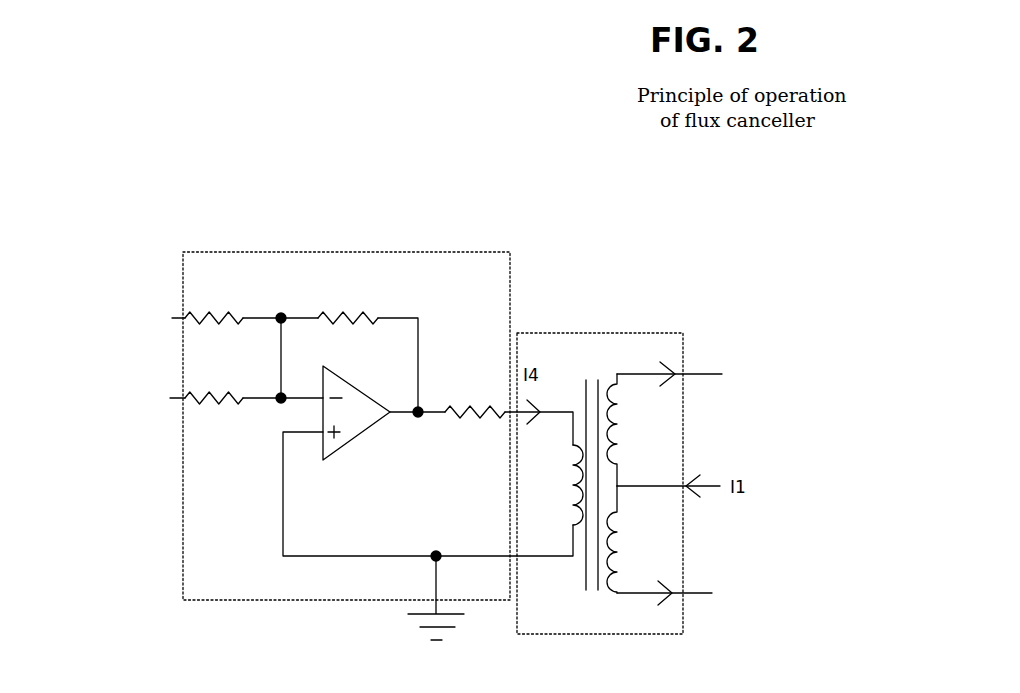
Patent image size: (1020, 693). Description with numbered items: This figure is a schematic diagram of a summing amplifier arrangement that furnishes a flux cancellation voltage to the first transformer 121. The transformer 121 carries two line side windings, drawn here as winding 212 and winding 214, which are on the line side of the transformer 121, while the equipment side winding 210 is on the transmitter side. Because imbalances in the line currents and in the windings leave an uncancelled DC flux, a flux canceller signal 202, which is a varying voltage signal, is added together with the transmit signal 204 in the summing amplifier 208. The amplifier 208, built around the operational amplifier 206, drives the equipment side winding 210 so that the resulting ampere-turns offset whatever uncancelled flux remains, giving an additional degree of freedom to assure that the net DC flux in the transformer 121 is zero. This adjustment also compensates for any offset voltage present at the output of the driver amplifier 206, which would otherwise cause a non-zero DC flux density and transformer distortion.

The first transformer 121 is at (625, 333).
The flux canceller signal 202 is at (96, 425).
The transmit signal input 204 is at (143, 278).
The driver amplifier 206 is at (365, 437).
The summing amplifier 208 is at (379, 255).
The cancellation winding N4 210 is at (565, 500).
The winding N2 212 is at (623, 398).
The winding N3 214 is at (626, 520).